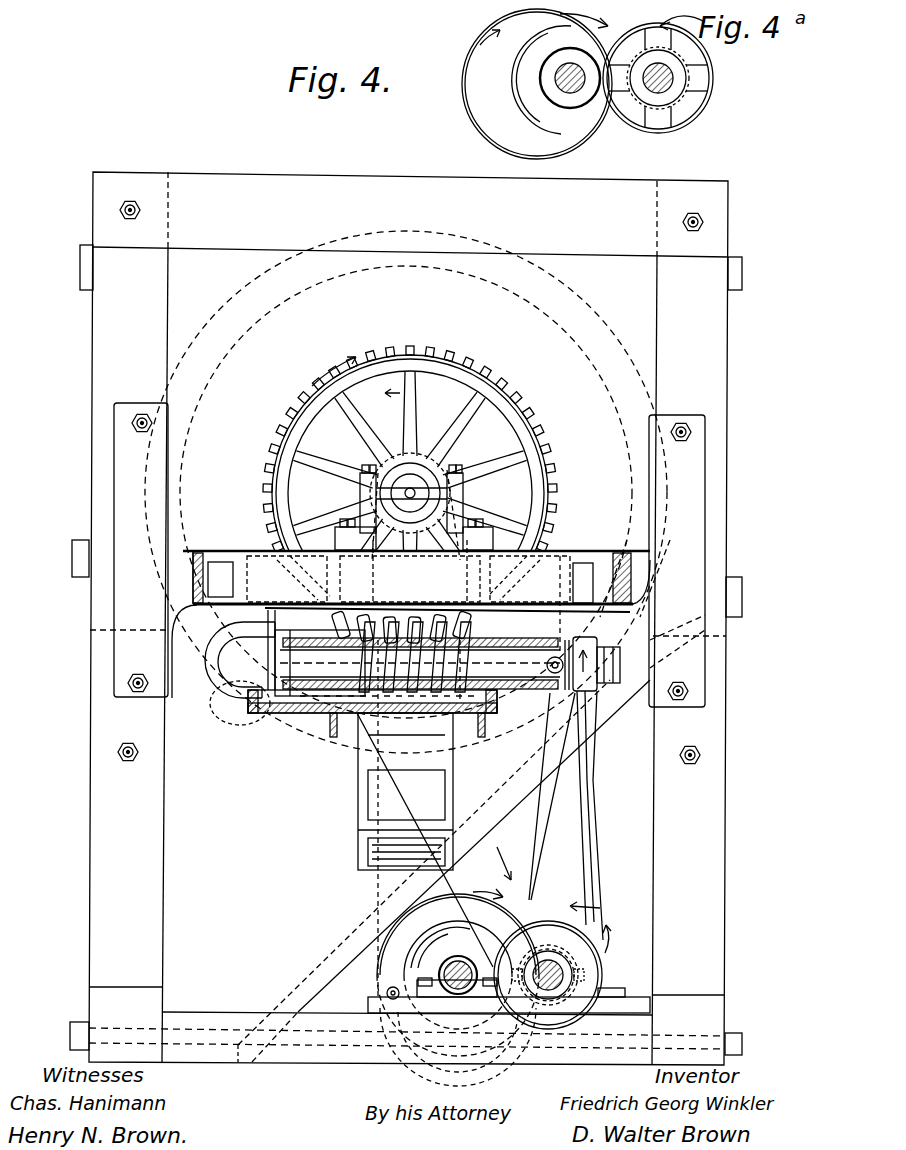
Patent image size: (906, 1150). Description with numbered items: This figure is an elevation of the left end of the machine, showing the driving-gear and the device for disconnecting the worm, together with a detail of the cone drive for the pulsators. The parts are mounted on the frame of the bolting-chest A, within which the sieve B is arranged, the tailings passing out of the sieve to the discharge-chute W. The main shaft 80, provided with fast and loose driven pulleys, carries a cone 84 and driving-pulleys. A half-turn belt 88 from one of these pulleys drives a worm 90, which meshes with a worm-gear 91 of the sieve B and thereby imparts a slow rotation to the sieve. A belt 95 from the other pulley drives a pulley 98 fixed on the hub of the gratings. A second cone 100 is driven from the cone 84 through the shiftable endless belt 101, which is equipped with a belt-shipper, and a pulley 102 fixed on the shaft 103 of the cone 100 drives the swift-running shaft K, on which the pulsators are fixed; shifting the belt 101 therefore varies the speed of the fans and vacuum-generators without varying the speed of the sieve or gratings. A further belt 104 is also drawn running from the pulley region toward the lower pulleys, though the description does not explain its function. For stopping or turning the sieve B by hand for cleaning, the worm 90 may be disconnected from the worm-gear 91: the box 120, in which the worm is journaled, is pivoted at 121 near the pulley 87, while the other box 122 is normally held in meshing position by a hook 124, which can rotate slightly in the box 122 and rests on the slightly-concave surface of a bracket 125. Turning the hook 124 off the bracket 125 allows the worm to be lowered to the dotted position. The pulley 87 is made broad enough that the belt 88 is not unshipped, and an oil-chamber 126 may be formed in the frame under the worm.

In FIG. 4, the bolting-chest A is at (350, 178).
In FIG. 4, the sieve B is at (530, 292).
In FIG. 4, the swift-running shaft K is at (406, 512).
In FIG. 4, the discharge-chute W is at (406, 852).
In FIG. 4, the worm-gear 91 is at (398, 355).
In FIG. 4, the pulley 98 is at (478, 366).
In FIG. 4, the worm 90 is at (417, 659).
In FIG. 4, the oil-chamber 126 is at (372, 713).
In FIG. 4, the hook 124 is at (212, 658).
In FIG. 4, the bracket 125 is at (258, 712).
In FIG. 4, the box 122 is at (310, 706).
In FIG. 4, the box 120 is at (556, 656).
In FIG. 4, the pivot 121 is at (568, 645).
In FIG. 4, the pulley 87 is at (598, 650).
In FIG. 4, the belt 95 is at (386, 768).
In FIG. 4, the belt 104 is at (508, 830).
In FIG. 4, the half-turn belt 88 is at (590, 792).
In FIG. 4a, the shiftable endless belt 101 is at (472, 122).
In FIG. 4, the shiftable endless belt 101 is at (466, 892).
In FIG. 4a, the cone 100 is at (531, 122).
In FIG. 4, the cone 100 is at (402, 964).
In FIG. 4a, the shaft 103 is at (573, 92).
In FIG. 4, the shaft 103 is at (464, 964).
In FIG. 4a, the cone 84 is at (712, 86).
In FIG. 4, the cone 84 is at (592, 936).
In FIG. 4a, the shaft 80 is at (655, 95).
In FIG. 4, the shaft 80 is at (563, 972).
In FIG. 4, the pulley 102 is at (460, 1050).